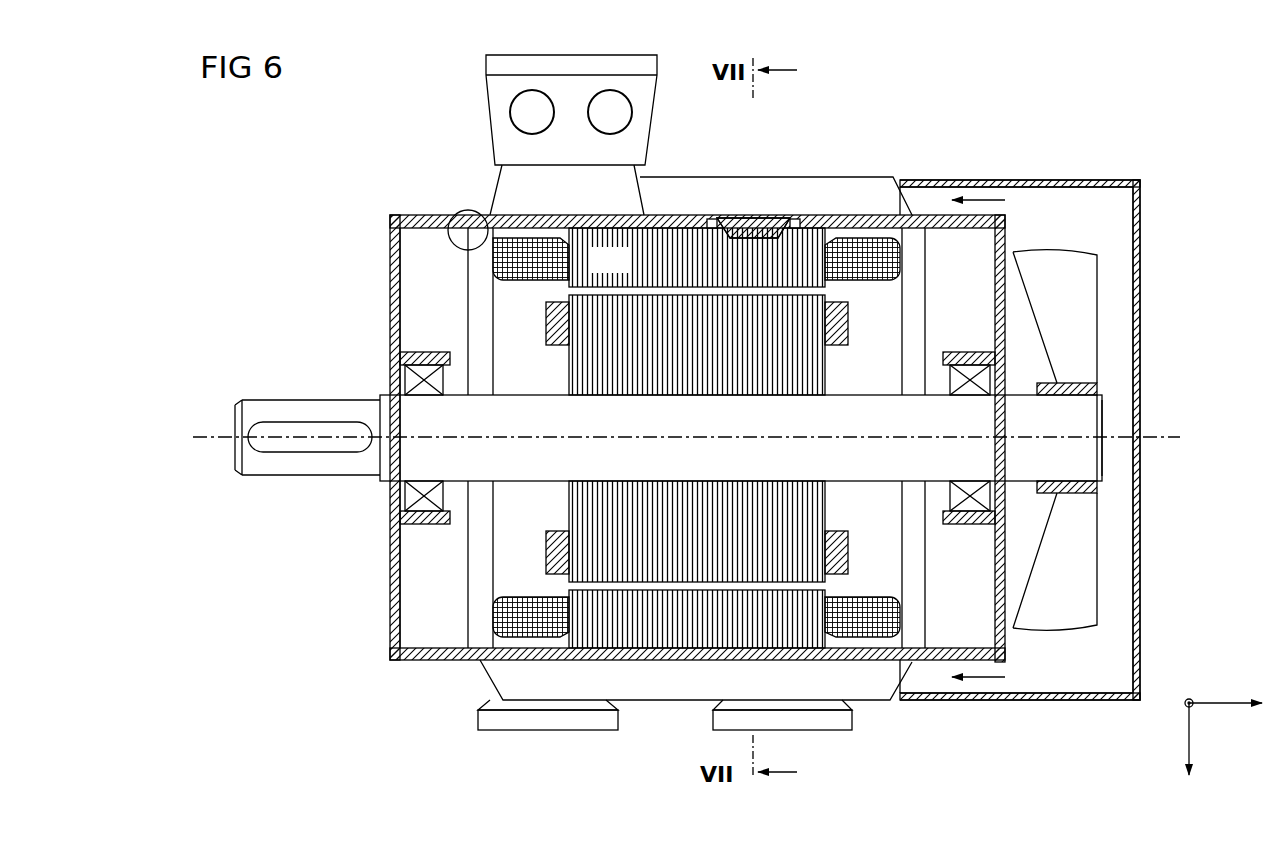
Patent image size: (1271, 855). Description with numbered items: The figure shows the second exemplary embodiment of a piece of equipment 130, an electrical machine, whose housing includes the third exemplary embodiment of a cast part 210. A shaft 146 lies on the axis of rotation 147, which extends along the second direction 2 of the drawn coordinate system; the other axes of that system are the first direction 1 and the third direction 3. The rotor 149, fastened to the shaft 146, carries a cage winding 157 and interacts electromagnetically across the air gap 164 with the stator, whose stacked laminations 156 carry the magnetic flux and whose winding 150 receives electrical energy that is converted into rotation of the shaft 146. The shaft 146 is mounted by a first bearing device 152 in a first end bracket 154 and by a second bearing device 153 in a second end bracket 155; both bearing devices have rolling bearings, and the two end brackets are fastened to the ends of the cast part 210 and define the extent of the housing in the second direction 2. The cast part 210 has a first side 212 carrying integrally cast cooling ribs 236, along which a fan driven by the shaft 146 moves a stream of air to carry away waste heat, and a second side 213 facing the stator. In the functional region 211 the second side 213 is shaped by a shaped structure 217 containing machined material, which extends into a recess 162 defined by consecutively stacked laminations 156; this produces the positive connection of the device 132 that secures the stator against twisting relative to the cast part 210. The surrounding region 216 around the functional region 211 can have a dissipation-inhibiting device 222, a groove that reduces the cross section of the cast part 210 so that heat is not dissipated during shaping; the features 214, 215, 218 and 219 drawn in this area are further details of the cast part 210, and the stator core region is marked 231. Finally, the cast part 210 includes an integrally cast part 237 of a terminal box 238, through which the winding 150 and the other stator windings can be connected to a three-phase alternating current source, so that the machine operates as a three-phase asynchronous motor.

The first direction 1 is at (1188, 743).
The second direction 2 is at (1230, 702).
The third direction 3 is at (1185, 700).
The piece of equipment 130 is at (328, 230).
The device for securing against twisting 132 is at (756, 170).
The shaft 146 is at (274, 406).
The axis of rotation 147 is at (200, 432).
The rotor 149 is at (574, 380).
The winding 150 is at (620, 484).
The first bearing device 152 is at (424, 508).
The second bearing device 153 is at (964, 514).
The first end bracket 154 is at (398, 645).
The second end bracket 155 is at (1006, 640).
The laminations 156 is at (636, 640).
The cage winding 157 is at (557, 556).
The recess 162 is at (782, 250).
The air gap 164 is at (885, 600).
The cast part 210 is at (477, 213).
The functional region 211 is at (768, 216).
The first side 212 is at (488, 210).
The second side 213 is at (417, 215).
The sensor element 214 is at (742, 216).
The sensor holder 215 is at (797, 216).
The surrounding region 216 is at (683, 214).
The shaped structure 217 is at (743, 240).
The insertion direction 218 is at (773, 203).
The sensor line 219 is at (761, 240).
The dissipation-inhibiting device 222 is at (710, 216).
The stator laminated core 231 is at (611, 260).
The cooling ribs 236 is at (884, 172).
The integrally cast part of terminal box 237 is at (518, 205).
The terminal box 238 is at (499, 95).